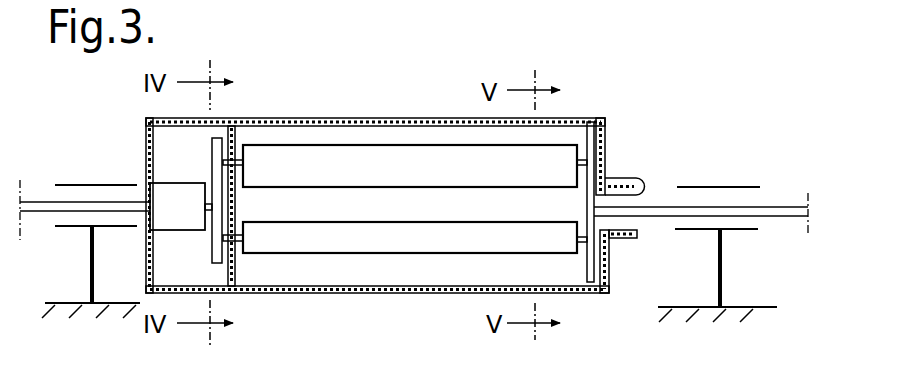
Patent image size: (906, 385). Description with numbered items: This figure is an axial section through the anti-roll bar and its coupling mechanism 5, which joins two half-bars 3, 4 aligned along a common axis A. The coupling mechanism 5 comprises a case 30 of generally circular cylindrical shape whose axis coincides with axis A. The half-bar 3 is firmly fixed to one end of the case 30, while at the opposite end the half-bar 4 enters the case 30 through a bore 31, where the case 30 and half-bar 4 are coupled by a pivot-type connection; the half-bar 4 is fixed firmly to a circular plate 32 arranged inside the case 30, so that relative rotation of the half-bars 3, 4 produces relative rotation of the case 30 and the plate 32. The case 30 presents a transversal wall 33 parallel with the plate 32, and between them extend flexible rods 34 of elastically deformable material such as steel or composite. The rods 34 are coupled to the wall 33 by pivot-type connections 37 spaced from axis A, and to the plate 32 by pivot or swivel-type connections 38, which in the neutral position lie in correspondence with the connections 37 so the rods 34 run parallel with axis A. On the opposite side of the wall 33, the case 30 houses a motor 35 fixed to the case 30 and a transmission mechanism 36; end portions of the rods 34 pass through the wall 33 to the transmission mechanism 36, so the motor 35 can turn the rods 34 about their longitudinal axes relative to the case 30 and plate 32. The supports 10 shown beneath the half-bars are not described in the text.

The half-bar 3 is at (35, 212).
The half-bar 4 is at (770, 207).
The coupling mechanism 5 is at (455, 100).
The bearing support 10 is at (83, 184).
The case 30 is at (373, 118).
The bore 31 is at (638, 193).
The circular plate 32 is at (583, 120).
The transversal wall 33 is at (240, 127).
The flexible rods 34 is at (430, 143).
The motor 35 is at (178, 231).
The transmission mechanism 36 is at (200, 157).
The connections 37 is at (237, 241).
The connections 38 is at (608, 243).